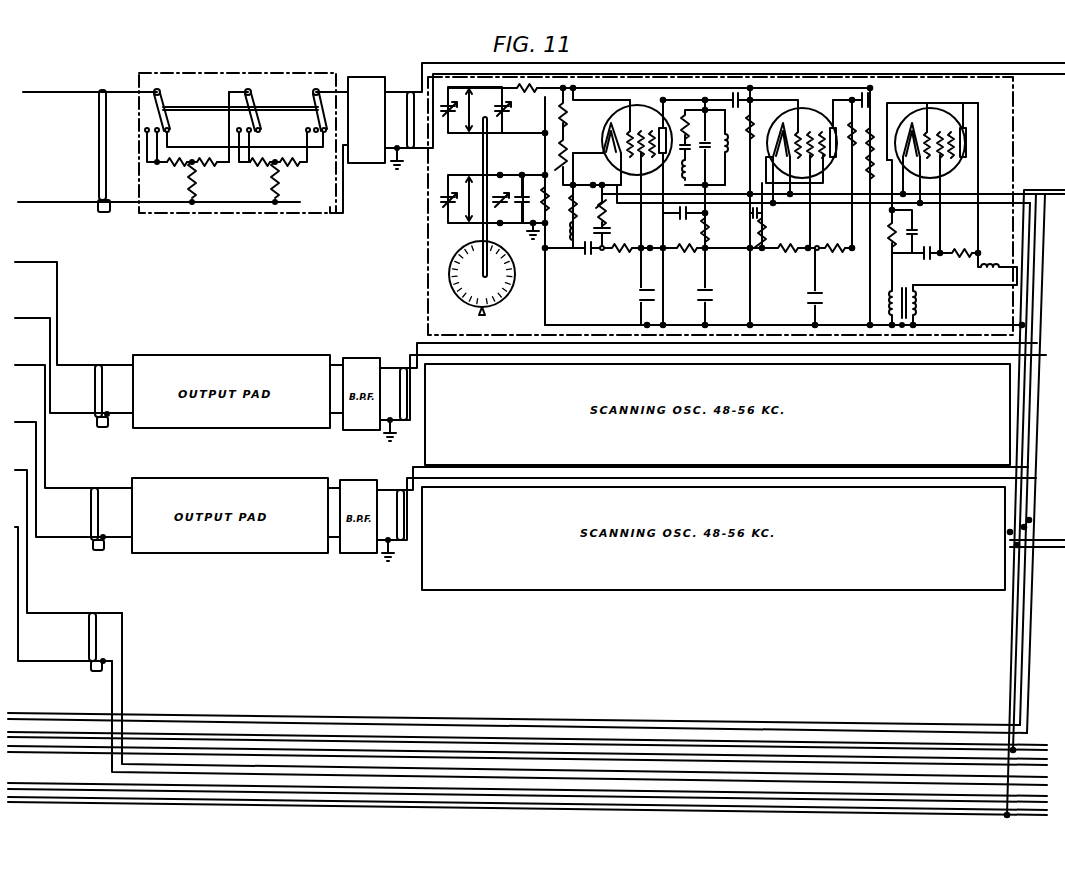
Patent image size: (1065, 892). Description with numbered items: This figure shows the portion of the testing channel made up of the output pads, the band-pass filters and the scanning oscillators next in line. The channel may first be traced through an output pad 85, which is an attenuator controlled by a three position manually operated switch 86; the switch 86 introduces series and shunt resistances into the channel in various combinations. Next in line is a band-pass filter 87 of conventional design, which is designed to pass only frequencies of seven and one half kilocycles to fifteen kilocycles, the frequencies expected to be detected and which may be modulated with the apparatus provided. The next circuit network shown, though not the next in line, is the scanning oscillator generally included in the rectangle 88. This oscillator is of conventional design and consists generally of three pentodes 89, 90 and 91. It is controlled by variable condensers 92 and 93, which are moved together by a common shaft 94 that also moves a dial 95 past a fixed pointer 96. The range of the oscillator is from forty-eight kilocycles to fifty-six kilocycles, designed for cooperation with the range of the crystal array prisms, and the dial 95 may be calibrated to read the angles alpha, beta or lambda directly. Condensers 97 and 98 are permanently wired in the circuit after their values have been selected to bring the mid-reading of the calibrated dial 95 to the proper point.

The output pad 85 is at (203, 75).
The three position manually operated switch 86 is at (265, 106).
The band-pass filter 87 is at (359, 76).
The rectangle 88 is at (416, 242).
The pentode 89 is at (604, 136).
The pentode 90 is at (772, 132).
The pentode 91 is at (902, 132).
The variable condenser 92 is at (506, 113).
The variable condenser 93 is at (502, 185).
The common shaft 94 is at (482, 234).
The dial 95 is at (507, 291).
The fixed pointer 96 is at (484, 308).
The condenser 97 is at (471, 110).
The condenser 98 is at (482, 190).